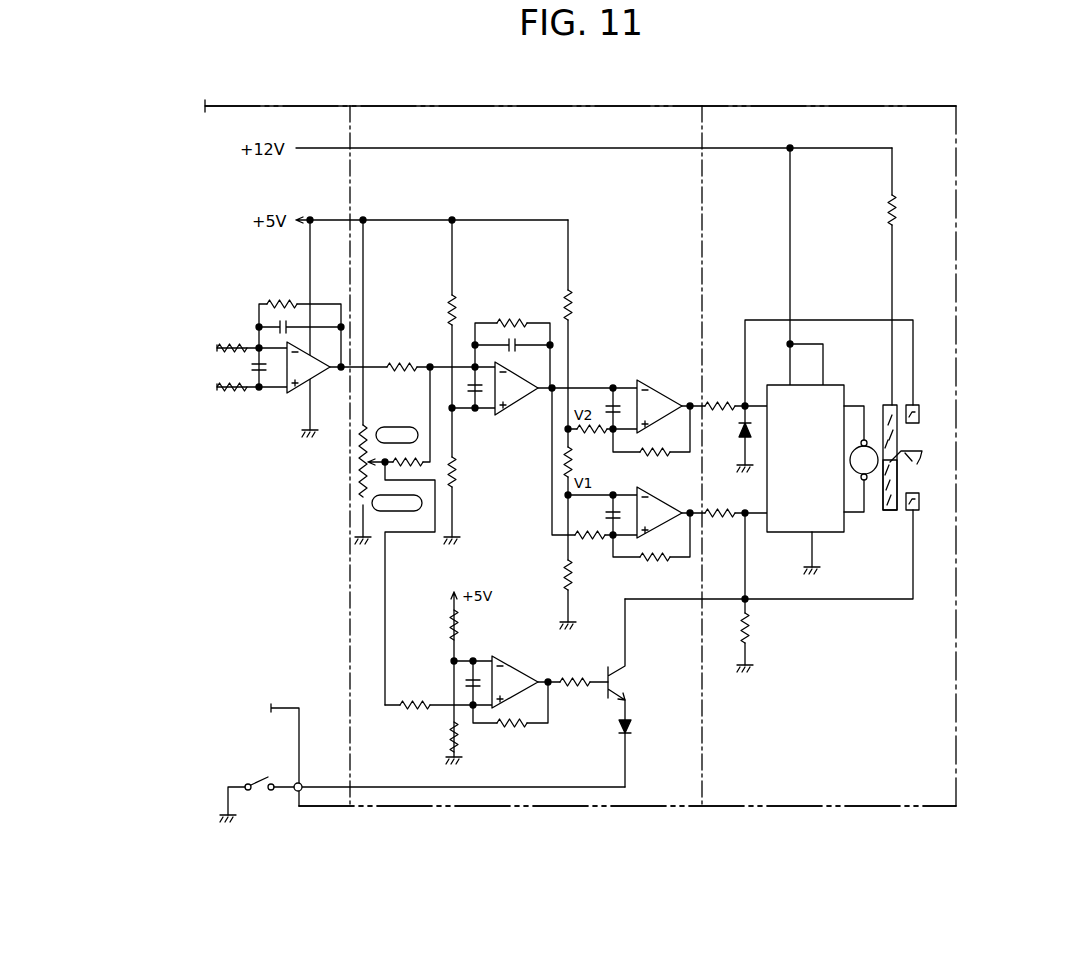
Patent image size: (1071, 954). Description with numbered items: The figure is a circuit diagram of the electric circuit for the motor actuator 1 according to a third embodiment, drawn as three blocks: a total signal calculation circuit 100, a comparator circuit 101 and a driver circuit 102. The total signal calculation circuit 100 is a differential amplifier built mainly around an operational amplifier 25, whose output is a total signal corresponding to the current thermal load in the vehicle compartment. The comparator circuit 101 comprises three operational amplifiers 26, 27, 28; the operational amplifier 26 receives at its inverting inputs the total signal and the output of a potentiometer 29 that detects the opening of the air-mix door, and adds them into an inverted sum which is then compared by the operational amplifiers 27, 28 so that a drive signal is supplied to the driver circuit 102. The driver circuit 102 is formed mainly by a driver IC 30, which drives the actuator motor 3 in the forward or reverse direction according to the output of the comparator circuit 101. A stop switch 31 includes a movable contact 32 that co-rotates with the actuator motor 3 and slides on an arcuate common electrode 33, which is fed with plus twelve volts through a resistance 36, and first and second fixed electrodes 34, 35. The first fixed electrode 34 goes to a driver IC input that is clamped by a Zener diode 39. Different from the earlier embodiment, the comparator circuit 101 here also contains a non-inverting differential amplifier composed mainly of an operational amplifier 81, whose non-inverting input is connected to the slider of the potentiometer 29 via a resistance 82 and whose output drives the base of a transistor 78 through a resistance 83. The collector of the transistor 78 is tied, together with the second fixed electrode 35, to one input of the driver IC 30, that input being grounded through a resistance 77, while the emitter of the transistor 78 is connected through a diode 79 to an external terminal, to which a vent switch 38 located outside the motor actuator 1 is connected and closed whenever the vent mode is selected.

The motor actuator 1 is at (590, 806).
The actuator motor 3 is at (860, 441).
The operational amplifier 25 is at (314, 372).
The operational amplifier 26 is at (513, 402).
The operational amplifier 27 is at (643, 378).
The operational amplifier 28 is at (643, 485).
The potentiometer 29 is at (358, 459).
The driver IC 30 is at (828, 537).
The stop switch 31 is at (881, 397).
The movable contact 32 is at (920, 473).
The common electrode 33 is at (890, 512).
The first fixed electrode 34 is at (912, 400).
The second fixed electrode 35 is at (917, 515).
The resistance 36 is at (896, 213).
The vent switch 38 is at (268, 790).
The Zener diode 39 is at (740, 441).
The resistance 77 is at (752, 632).
The transistor 78 is at (606, 668).
The diode 79 is at (630, 724).
The operational amplifier 81 is at (515, 667).
The resistance 82 is at (413, 710).
The resistor 83 is at (575, 690).
The total signal calculation circuit 100 is at (258, 106).
The comparator circuit 101 is at (480, 106).
The driver circuit 102 is at (870, 105).